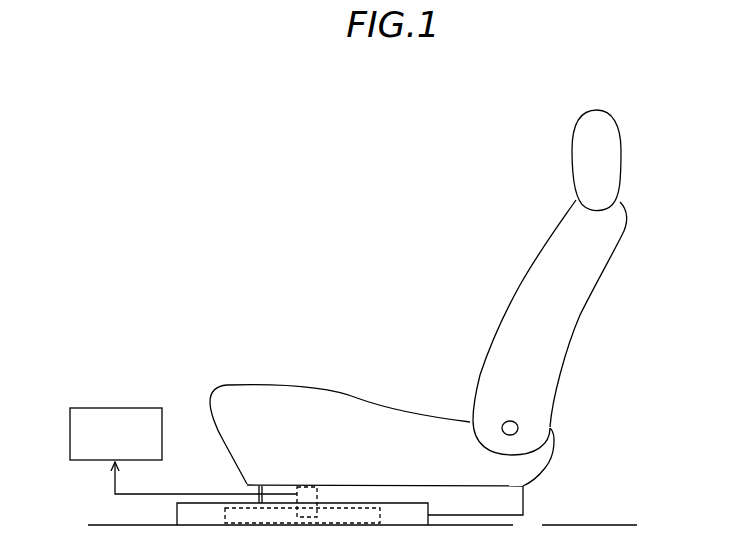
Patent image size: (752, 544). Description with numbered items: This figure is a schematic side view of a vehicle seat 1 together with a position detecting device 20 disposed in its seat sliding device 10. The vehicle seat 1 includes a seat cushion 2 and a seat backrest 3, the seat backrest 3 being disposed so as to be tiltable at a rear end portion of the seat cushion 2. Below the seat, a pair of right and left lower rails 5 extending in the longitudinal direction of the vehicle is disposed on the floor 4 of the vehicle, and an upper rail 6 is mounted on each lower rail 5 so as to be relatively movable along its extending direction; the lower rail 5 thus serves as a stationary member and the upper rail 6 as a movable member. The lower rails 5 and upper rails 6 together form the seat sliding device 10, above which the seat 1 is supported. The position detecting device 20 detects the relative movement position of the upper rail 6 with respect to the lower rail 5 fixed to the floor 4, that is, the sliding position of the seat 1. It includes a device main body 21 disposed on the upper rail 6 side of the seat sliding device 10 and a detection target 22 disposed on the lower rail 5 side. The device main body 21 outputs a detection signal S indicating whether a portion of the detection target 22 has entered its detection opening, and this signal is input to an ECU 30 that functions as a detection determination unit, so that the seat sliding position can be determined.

The vehicle seat 1 is at (320, 192).
The seat cushion 2 is at (229, 385).
The seat backrest 3 is at (627, 218).
The floor 4 is at (620, 524).
The lower rail 5 is at (400, 502).
The upper rail 6 is at (450, 486).
The seat sliding device 10 is at (472, 448).
The position detecting device 20 is at (75, 388).
The device main body 21 is at (326, 487).
The detection target 22 is at (350, 508).
The ECU 30 is at (116, 407).